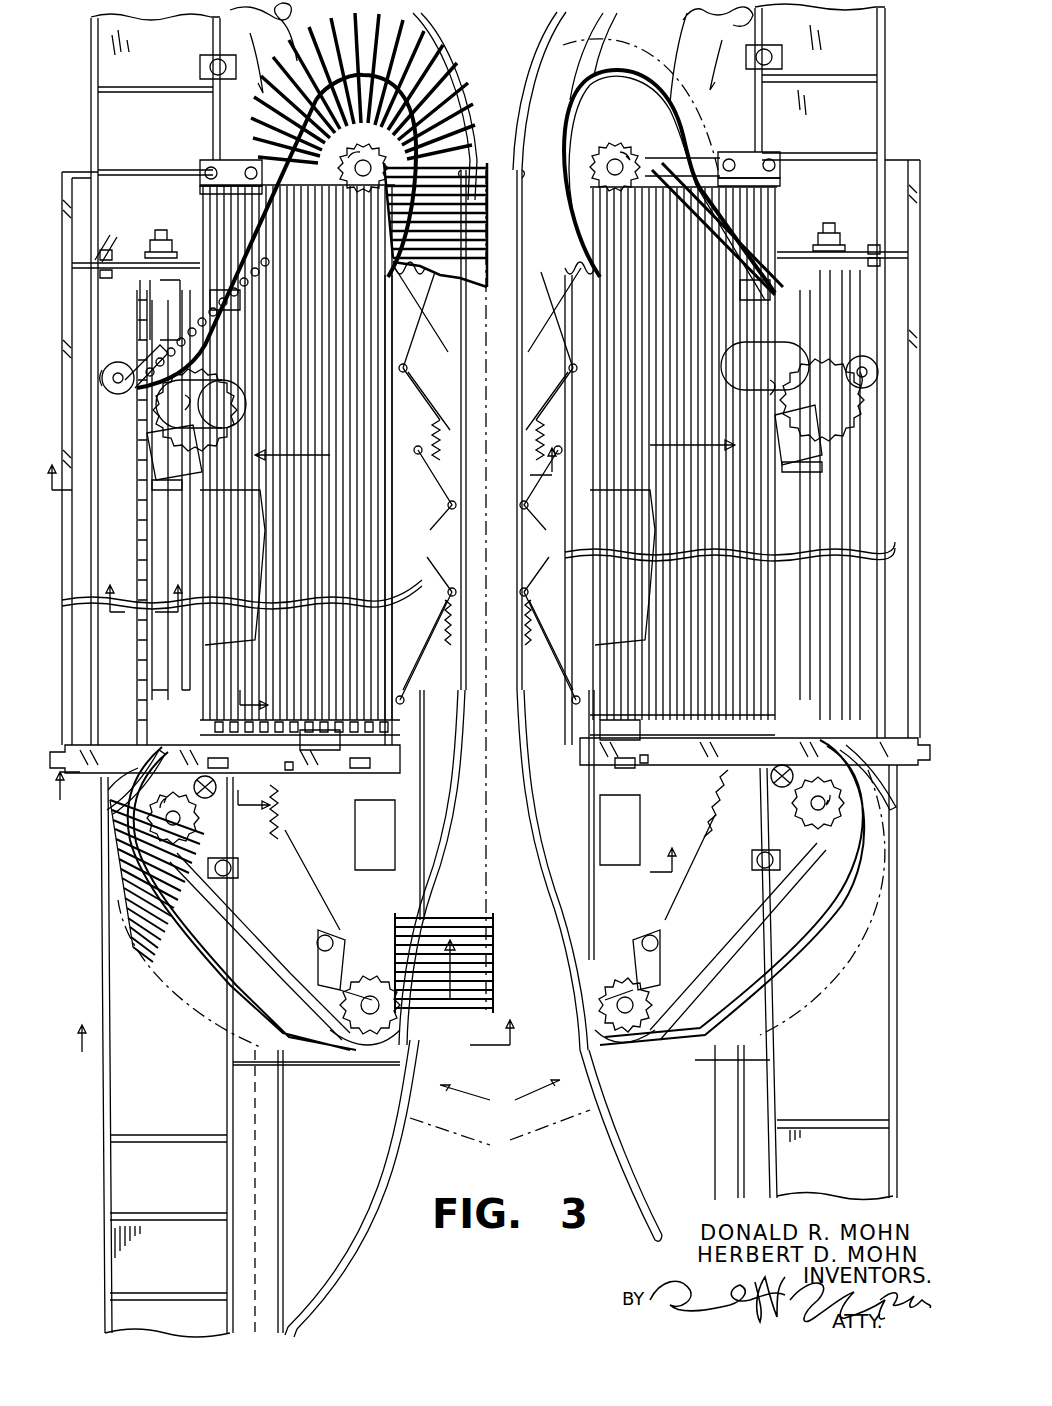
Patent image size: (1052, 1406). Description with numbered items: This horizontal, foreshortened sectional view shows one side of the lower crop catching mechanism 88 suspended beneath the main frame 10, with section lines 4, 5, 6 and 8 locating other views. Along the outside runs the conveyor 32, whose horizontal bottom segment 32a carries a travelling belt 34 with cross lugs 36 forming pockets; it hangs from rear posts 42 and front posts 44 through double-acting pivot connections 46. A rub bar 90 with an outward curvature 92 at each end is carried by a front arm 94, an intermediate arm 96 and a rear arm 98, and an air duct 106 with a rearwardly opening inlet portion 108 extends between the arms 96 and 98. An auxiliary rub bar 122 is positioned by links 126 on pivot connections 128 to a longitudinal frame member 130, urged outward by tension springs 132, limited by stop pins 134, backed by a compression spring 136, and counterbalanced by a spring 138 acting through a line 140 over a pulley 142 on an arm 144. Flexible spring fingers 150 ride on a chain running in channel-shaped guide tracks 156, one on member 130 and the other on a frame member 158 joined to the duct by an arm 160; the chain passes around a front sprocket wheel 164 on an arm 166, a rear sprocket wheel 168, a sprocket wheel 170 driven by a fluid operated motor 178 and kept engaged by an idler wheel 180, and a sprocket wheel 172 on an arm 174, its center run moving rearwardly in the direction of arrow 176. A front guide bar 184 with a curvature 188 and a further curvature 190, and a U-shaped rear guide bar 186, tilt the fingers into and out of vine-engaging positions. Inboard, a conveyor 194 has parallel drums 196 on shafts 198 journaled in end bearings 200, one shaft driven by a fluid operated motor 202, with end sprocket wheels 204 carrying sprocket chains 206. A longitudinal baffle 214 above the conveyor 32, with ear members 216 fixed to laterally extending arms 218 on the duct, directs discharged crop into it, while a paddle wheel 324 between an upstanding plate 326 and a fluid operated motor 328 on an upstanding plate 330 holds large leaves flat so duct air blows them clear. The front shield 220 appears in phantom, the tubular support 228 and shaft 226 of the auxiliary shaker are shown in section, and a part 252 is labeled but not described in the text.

The section line 4- 4 is at (366, 823).
The section line 5- 5 is at (302, 470).
The section line 6- 6 is at (295, 1038).
The section line 8- 8 is at (144, 586).
The main frame 10 is at (254, 749).
The conveyor 32 is at (897, 1058).
The horizontal bottom segment 32a is at (885, 65).
The travelling belt 34 is at (867, 1152).
The cross lugs 36 is at (893, 1176).
The rear posts 42 is at (215, 60).
The front posts 44 is at (228, 878).
The pivot connections 46 is at (205, 70).
The crop catching mechanism 88 is at (500, 1101).
The rub bar 90 is at (345, 1260).
The outward curvature 92 is at (385, 25).
The front arm 94 is at (330, 1065).
The intermediate arm 96 is at (330, 760).
The rear arm 98 is at (262, 175).
The air duct 106 is at (264, 119).
The inlet portion 108 is at (293, 64).
The auxiliary rub bar 122 is at (540, 872).
The links 126 is at (440, 360).
The pivot connections 128 is at (525, 258).
The longitudinal frame member 130 is at (408, 455).
The tension springs 132 is at (445, 320).
The stop pins 134 is at (452, 390).
The backup compression spring 136 is at (570, 272).
The spring 138 is at (286, 835).
The line 140 is at (325, 890).
The pulley 142 is at (318, 938).
The arm 144 is at (352, 960).
The flexible fingers 150 is at (480, 100).
The guide tracks 156 is at (137, 470).
The frame member 158 is at (198, 461).
The arm 160 is at (158, 472).
The front sprocket wheel 164 is at (365, 990).
The arm 166 is at (365, 1040).
The rear sprocket wheel 168 is at (438, 118).
The sprocket wheel 170 is at (160, 395).
The sprocket wheel 172 is at (115, 895).
The arm 174 is at (112, 825).
The arrow 176 is at (450, 972).
The fluid operated motor 178 is at (243, 414).
The idler wheel 180 is at (118, 362).
The front guide bar 184 is at (215, 965).
The rear guide bar 186 is at (322, 72).
The curvature 188 is at (112, 840).
The curvature 190 is at (250, 960).
The conveyor 194 is at (325, 346).
The drums 196 is at (232, 520).
The shafts 198 is at (230, 194).
The end bearings 200 is at (225, 165).
The fluid operated motor 202 is at (355, 830).
The end sprocket wheels 204 is at (380, 715).
The sprocket chains 206 is at (345, 722).
The longitudinal baffle 214 is at (65, 185).
The ear members 216 is at (119, 237).
The laterally extending arms 218 is at (128, 258).
The front shield 220 is at (500, 1133).
The shaft 226 is at (205, 800).
The tubular support 228 is at (280, 810).
The base plate 252 is at (925, 755).
The paddle wheel 324 is at (158, 308).
The upstanding plate 326 is at (173, 232).
The fluid operated motor 328 is at (185, 700).
The upstanding plate 330 is at (148, 690).